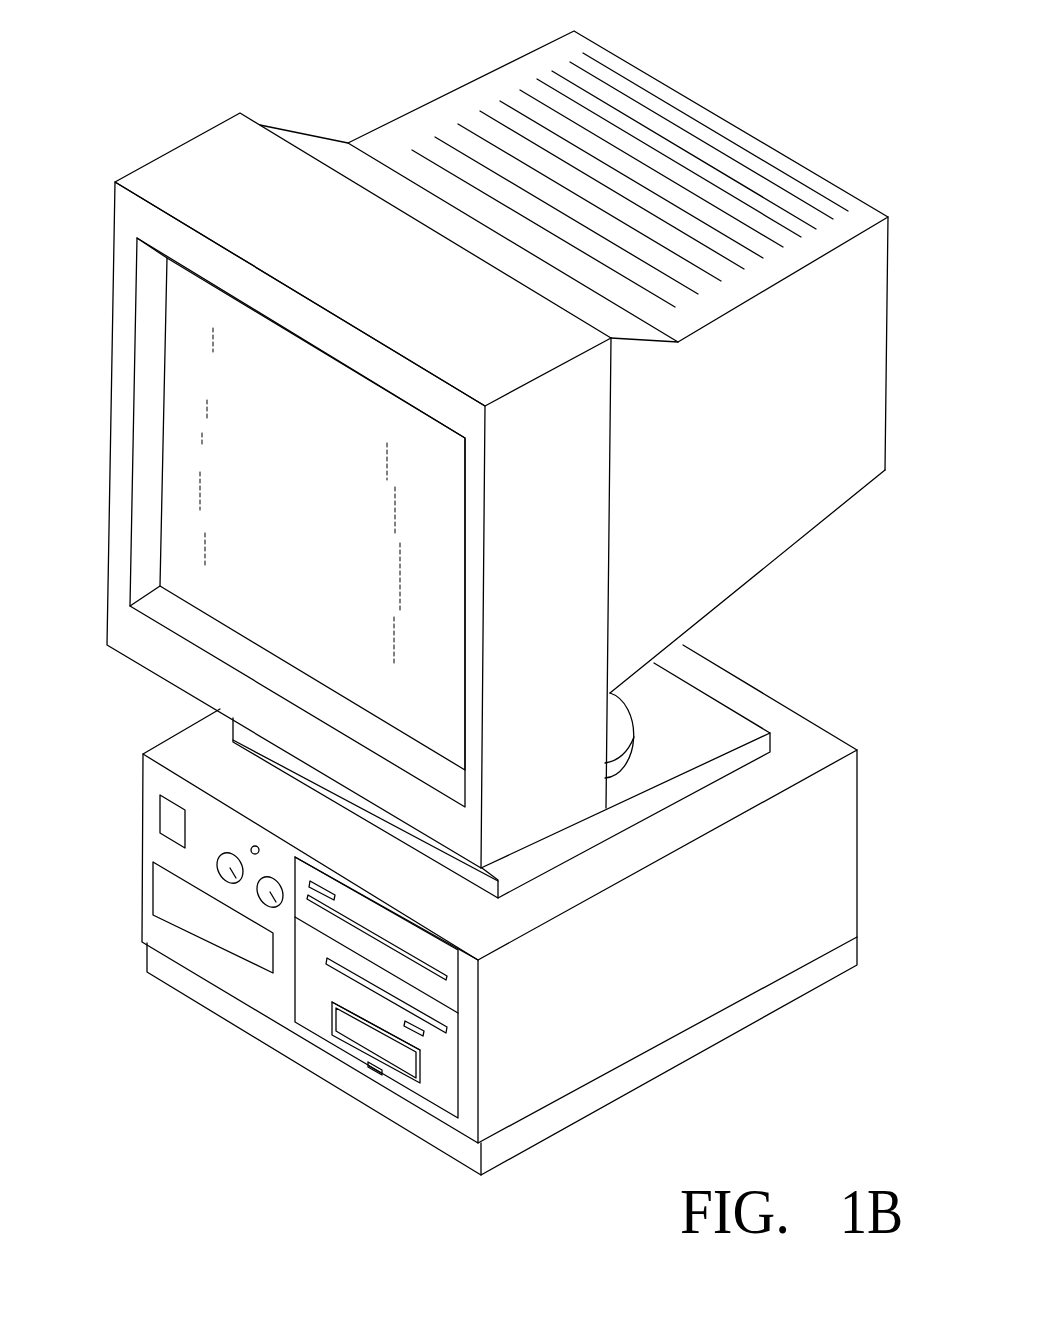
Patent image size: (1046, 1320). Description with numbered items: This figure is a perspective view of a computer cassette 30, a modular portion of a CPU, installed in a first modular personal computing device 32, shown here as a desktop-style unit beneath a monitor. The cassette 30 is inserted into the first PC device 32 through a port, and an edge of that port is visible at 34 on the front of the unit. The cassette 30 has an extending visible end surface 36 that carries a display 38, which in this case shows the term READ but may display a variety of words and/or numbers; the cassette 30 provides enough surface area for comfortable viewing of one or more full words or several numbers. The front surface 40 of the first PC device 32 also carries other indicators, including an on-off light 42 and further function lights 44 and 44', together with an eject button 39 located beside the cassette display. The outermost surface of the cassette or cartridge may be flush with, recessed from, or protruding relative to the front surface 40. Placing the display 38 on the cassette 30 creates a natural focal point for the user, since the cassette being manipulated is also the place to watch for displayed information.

The computer cassette 30 is at (428, 1090).
The first modular personal computing device 32 is at (103, 824).
The port edge 34 is at (417, 1043).
The visible end surface 36 is at (345, 1020).
The display 38 is at (355, 1036).
The eject button 39 is at (372, 1076).
The front surface 40 is at (238, 843).
The on-off light 42 is at (253, 845).
The function light 44 is at (212, 889).
The function light 44' is at (255, 915).